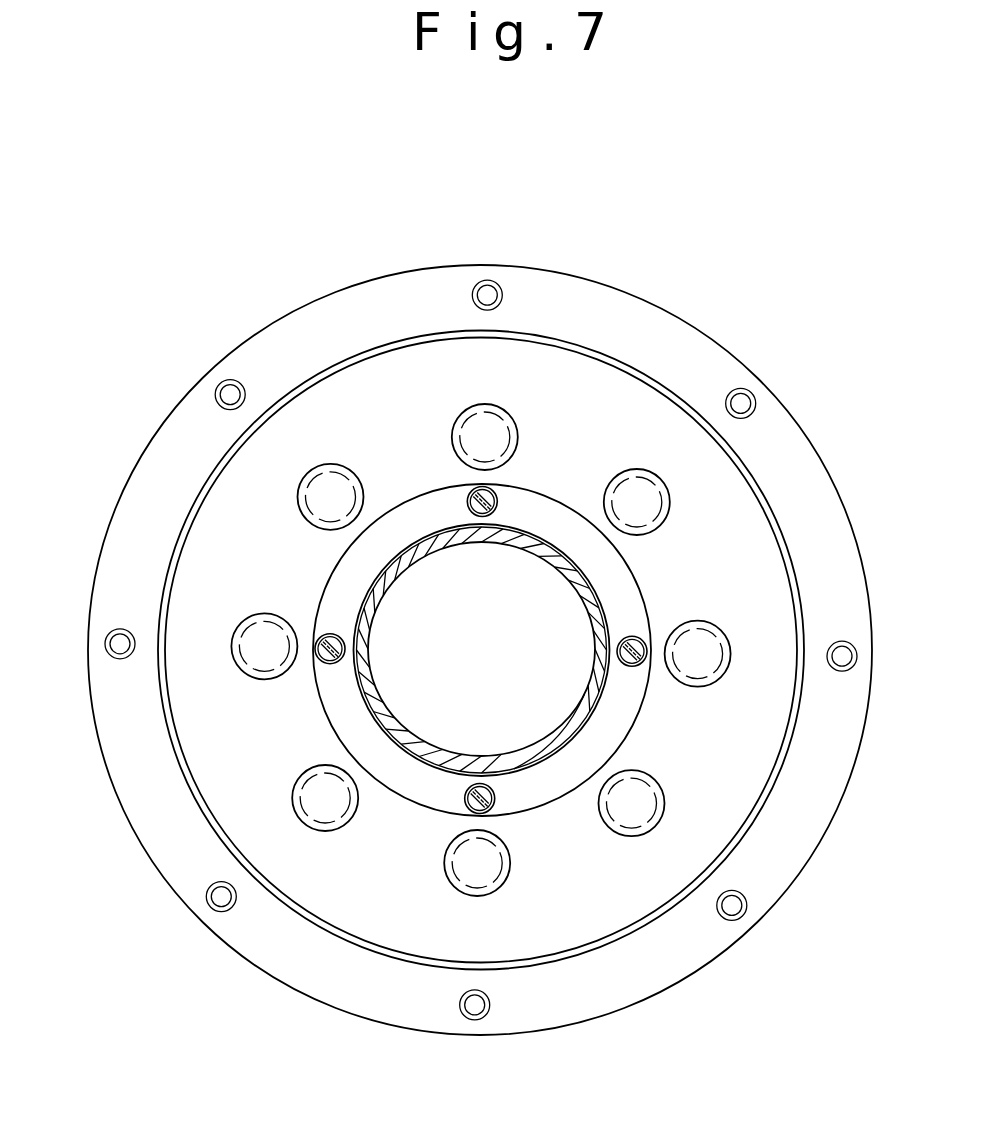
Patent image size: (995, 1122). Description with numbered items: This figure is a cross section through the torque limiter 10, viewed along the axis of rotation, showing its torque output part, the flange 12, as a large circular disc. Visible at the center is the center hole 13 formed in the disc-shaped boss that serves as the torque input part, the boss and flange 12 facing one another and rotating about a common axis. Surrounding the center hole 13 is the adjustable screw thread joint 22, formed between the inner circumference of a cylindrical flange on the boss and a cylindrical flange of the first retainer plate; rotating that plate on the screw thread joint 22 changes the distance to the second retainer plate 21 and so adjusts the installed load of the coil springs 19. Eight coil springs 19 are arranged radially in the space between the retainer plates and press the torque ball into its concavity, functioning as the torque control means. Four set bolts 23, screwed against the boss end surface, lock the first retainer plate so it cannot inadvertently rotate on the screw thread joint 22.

The torque limiter 10 is at (746, 300).
The flange 12 is at (783, 878).
The center hole 13 is at (472, 601).
The spring 19 is at (326, 466).
The second retainer plate 21 is at (752, 782).
The screw thread joint 22 is at (373, 735).
The set bolts 23 is at (496, 498).